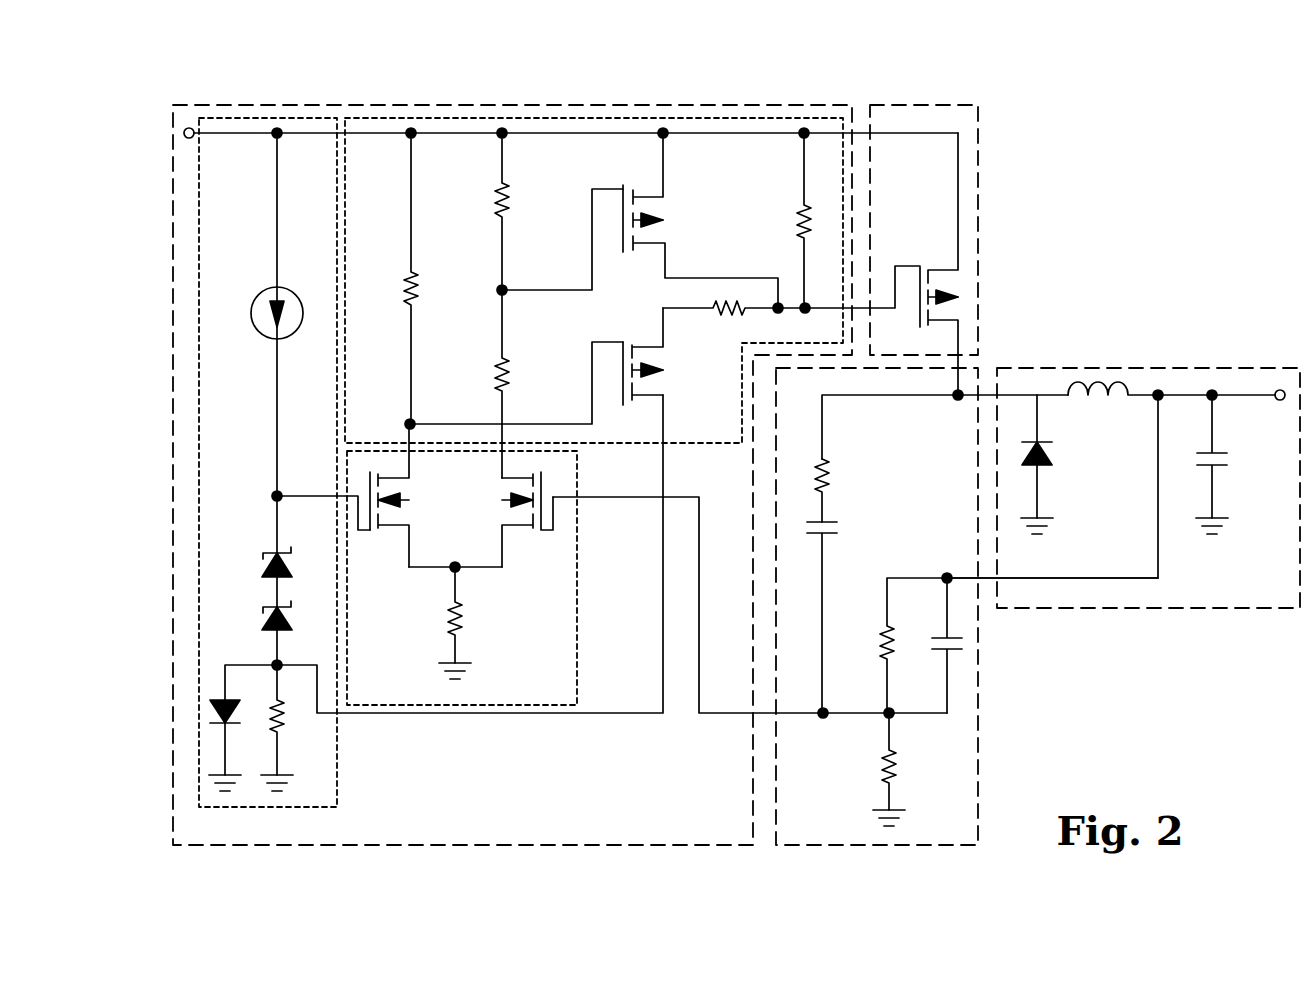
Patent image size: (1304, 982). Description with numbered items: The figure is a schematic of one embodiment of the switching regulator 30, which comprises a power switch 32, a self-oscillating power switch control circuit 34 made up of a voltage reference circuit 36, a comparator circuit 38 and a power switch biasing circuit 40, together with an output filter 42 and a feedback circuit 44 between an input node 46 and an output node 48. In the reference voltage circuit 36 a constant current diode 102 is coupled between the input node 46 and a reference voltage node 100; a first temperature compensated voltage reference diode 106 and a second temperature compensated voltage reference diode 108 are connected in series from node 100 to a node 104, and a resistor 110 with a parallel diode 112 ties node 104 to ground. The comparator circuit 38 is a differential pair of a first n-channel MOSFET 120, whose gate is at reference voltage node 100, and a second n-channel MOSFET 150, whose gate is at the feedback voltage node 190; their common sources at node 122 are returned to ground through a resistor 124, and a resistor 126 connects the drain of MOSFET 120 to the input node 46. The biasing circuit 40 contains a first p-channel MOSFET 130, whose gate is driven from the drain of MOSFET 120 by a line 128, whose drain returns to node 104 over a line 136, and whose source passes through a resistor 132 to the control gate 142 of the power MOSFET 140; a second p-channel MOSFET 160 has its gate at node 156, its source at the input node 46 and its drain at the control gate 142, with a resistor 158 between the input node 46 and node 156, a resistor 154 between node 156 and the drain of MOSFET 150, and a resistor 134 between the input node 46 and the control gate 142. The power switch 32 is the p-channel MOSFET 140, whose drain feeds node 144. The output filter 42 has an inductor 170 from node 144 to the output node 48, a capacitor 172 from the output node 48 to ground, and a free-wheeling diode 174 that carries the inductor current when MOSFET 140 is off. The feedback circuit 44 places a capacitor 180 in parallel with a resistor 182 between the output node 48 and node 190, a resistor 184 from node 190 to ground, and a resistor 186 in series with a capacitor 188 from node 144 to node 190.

The switching regulator 30 is at (150, 108).
The power switch 32 is at (980, 133).
The self-oscillating power switch control circuit 34 is at (486, 103).
The voltage reference circuit 36 is at (338, 790).
The comparator circuit 38 is at (578, 628).
The power switch biasing circuit 40 is at (696, 444).
The output filter 42 is at (1153, 609).
The feedback circuit 44 is at (979, 770).
The input node 46 is at (192, 138).
The output node 48 is at (1277, 400).
The reference voltage node 100 is at (273, 496).
The constant current diode 102 is at (252, 318).
The node 104 is at (273, 664).
The first temperature compensated voltage reference diode 106 is at (264, 567).
The second temperature compensated voltage reference diode 108 is at (264, 620).
The resistor 110 is at (282, 733).
The diode 112 is at (228, 725).
The first n-channel MOSFET 120 is at (372, 533).
The common source node 122 is at (455, 562).
The resistor 124 is at (466, 632).
The resistor 126 is at (418, 290).
The line 128 is at (452, 423).
The first p-channel MOSFET 130 is at (625, 342).
The resistor 132 is at (716, 325).
The resistor 134 is at (798, 212).
The line 136 is at (520, 714).
The p-channel MOSFET 140 is at (923, 266).
The control gate 142 is at (781, 312).
The node 144 is at (957, 400).
The second n-channel MOSFET 150 is at (537, 533).
The resistor 154 is at (508, 362).
The node 156 is at (506, 296).
The resistor 158 is at (508, 196).
The second p-channel MOSFET 160 is at (624, 190).
The inductor 170 is at (1098, 400).
The capacitor 172 is at (1224, 458).
The free-wheeling diode 174 is at (1043, 462).
The capacitor 180 is at (962, 645).
The resistor 182 is at (884, 640).
The resistor 184 is at (883, 772).
The resistor 186 is at (826, 490).
The capacitor 188 is at (840, 531).
The feedback voltage node 190 is at (625, 498).